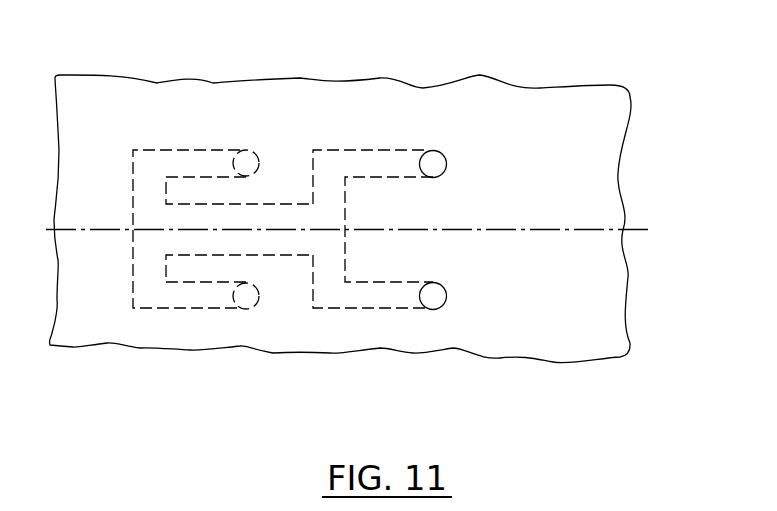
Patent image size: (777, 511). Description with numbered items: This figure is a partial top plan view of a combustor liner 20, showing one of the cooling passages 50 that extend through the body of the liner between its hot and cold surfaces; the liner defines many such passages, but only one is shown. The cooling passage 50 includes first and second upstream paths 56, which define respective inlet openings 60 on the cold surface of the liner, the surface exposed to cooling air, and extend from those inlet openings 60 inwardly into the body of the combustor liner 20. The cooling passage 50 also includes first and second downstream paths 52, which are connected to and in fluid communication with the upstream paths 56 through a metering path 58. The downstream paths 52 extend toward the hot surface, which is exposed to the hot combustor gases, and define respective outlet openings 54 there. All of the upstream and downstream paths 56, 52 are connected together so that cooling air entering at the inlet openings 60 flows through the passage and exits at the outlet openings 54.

The combustor liner 20 is at (614, 124).
The cooling passage 50 is at (297, 255).
The downstream paths 52 is at (387, 150).
The outlet openings 54 is at (438, 162).
The upstream paths 56 is at (182, 150).
The metering path 58 is at (278, 204).
The inlet openings 60 is at (247, 160).